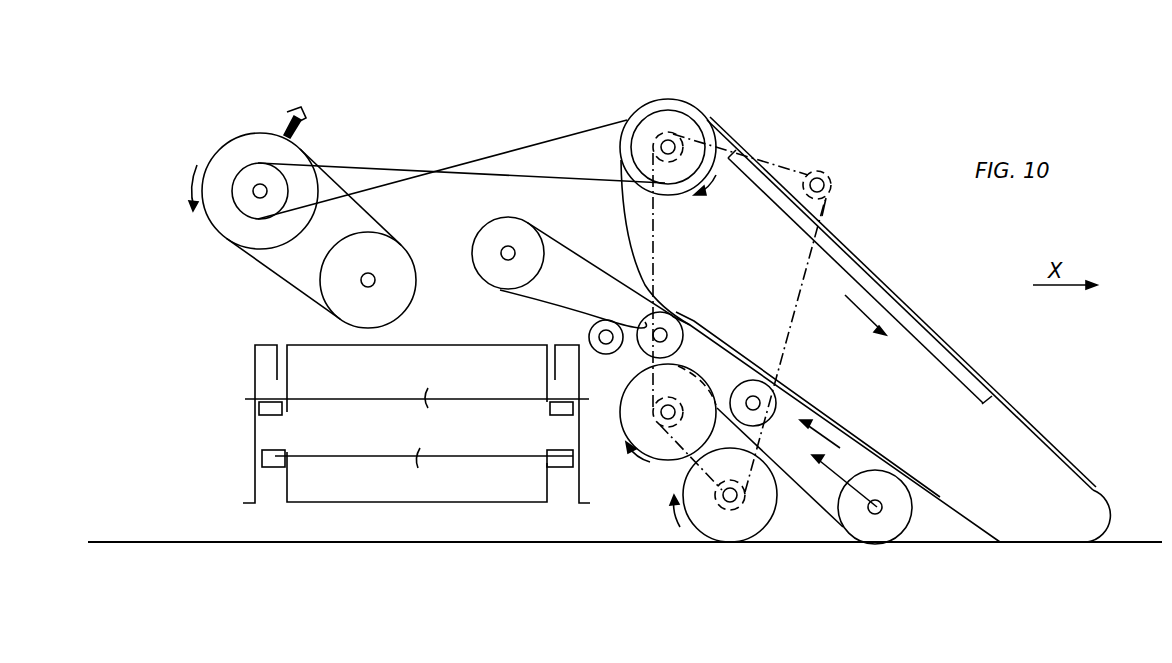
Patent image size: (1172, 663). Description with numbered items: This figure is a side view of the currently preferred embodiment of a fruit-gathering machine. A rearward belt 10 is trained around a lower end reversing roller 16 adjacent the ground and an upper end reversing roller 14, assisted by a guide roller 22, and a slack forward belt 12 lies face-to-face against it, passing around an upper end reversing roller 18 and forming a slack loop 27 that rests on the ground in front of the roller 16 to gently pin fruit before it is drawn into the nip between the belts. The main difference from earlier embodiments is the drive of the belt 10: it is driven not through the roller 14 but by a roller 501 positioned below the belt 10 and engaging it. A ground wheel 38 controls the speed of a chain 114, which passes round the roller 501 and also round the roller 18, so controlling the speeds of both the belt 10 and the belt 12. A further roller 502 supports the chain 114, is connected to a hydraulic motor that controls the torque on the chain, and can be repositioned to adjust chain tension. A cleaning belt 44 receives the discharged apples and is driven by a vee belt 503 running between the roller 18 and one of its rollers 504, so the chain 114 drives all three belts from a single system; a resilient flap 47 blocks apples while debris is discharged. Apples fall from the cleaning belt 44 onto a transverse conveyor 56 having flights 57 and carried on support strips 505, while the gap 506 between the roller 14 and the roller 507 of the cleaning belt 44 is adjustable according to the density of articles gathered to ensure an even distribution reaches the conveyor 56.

The rearward belt 10 is at (580, 258).
The forward belt 12 is at (1038, 432).
The upper end reversing roller 14 is at (502, 222).
The lower end reversing roller 16 is at (880, 538).
The upper end reversing roller 18 is at (672, 100).
The guide roller 22 is at (678, 326).
The slack loop 27 is at (1036, 545).
The ground wheel 38 is at (730, 532).
The cleaning belt 44 is at (245, 266).
The resilient flap 47 is at (300, 128).
The transverse conveyor 56 is at (297, 365).
The flights 57 is at (417, 428).
The chain 114 is at (823, 214).
The roller 501 is at (652, 442).
The roller 502 is at (824, 180).
The vee belt 503 is at (543, 143).
The roller 504 is at (248, 135).
The support strips 505 is at (259, 417).
The gap 506 is at (452, 296).
The roller 507 is at (346, 304).